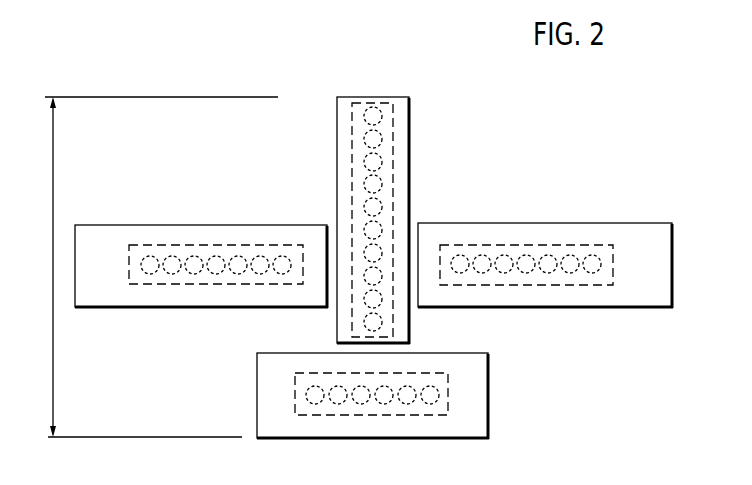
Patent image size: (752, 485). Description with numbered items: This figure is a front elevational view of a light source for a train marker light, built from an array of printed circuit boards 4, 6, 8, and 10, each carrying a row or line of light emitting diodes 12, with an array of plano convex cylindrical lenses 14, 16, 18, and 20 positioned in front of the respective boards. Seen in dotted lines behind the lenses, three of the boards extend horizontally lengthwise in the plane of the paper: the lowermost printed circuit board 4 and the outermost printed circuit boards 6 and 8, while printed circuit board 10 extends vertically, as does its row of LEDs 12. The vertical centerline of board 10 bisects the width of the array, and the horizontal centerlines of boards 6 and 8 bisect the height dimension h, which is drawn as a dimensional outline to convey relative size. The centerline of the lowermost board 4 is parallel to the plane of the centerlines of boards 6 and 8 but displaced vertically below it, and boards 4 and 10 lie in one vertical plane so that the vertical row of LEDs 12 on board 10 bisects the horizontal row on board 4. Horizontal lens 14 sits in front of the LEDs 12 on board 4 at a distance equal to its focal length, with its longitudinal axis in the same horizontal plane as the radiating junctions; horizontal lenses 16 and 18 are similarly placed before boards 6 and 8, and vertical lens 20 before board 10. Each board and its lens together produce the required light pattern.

The printed circuit board 4 is at (338, 390).
The printed circuit board 6 is at (203, 245).
The printed circuit board 8 is at (595, 245).
The printed circuit board 10 is at (401, 220).
The light emitting diodes 12 is at (342, 453).
The cylindrical lens 14 is at (483, 387).
The cylindrical lens 16 is at (130, 233).
The cylindrical lens 18 is at (555, 232).
The cylindrical lens 20 is at (403, 184).
The height dimension h is at (157, 267).